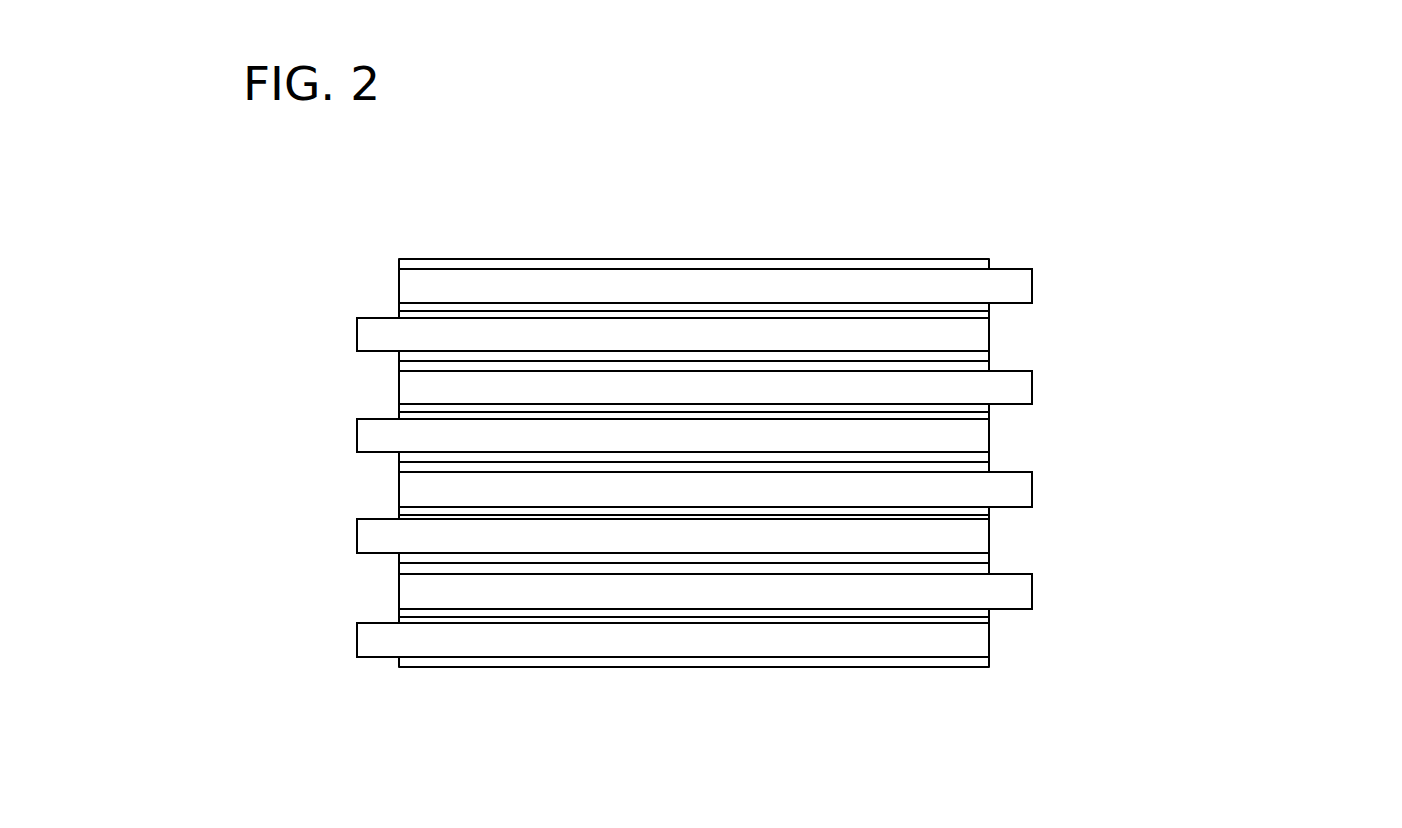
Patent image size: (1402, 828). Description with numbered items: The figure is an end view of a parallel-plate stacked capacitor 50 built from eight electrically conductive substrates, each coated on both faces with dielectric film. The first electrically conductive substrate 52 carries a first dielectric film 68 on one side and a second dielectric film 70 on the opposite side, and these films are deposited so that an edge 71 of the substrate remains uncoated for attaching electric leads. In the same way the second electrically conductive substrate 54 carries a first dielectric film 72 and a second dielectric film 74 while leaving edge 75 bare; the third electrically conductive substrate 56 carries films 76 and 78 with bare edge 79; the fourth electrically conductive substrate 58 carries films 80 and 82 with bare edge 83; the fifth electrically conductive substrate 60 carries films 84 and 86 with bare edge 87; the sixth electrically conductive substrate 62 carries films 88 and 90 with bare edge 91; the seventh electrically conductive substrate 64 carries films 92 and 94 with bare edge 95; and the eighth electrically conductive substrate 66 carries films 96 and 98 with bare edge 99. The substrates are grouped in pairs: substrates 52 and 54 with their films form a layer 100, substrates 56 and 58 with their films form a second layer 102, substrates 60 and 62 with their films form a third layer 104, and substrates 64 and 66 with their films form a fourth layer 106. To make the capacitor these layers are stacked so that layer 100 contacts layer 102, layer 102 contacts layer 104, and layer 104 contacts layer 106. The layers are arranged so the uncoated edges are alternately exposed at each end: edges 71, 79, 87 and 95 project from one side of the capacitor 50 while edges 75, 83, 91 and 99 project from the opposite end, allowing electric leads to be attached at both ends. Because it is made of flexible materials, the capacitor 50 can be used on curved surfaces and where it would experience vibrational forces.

The capacitor 50 is at (564, 253).
The first electrically conductive substrate 52 is at (1023, 295).
The second electrically conductive substrate 54 is at (378, 341).
The third electrically conductive substrate 56 is at (1017, 378).
The fourth electrically conductive substrate 58 is at (370, 431).
The fifth electrically conductive substrate 60 is at (1007, 496).
The sixth electrically conductive substrate 62 is at (368, 541).
The seventh electrically conductive substrate 64 is at (1008, 587).
The eighth electrically conductive substrate 66 is at (375, 638).
The first dielectric film 68 is at (398, 262).
The second dielectric film 70 is at (398, 305).
The first dielectric film 72 is at (989, 316).
The second dielectric film 74 is at (989, 357).
The first dielectric film 76 is at (398, 362).
The second dielectric film 78 is at (398, 410).
The first dielectric film 80 is at (989, 420).
The second dielectric film 82 is at (989, 460).
The first dielectric film 84 is at (398, 462).
The second dielectric film 86 is at (398, 506).
The first dielectric film 88 is at (989, 517).
The second dielectric film 90 is at (989, 560).
The first dielectric film 92 is at (398, 567).
The second dielectric film 94 is at (398, 610).
The first dielectric film 96 is at (989, 620).
The second dielectric film 98 is at (989, 664).
The uncoated edge 71 is at (1033, 273).
The uncoated edge 75 is at (357, 328).
The uncoated edge 79 is at (1033, 397).
The uncoated edge 83 is at (357, 443).
The uncoated edge 87 is at (1033, 480).
The uncoated edge 91 is at (357, 528).
The uncoated edge 95 is at (1033, 604).
The uncoated edge 99 is at (357, 656).
The layer 100 is at (1242, 354).
The second layer 102 is at (1242, 455).
The third layer 104 is at (1242, 555).
The fourth layer 106 is at (1242, 660).